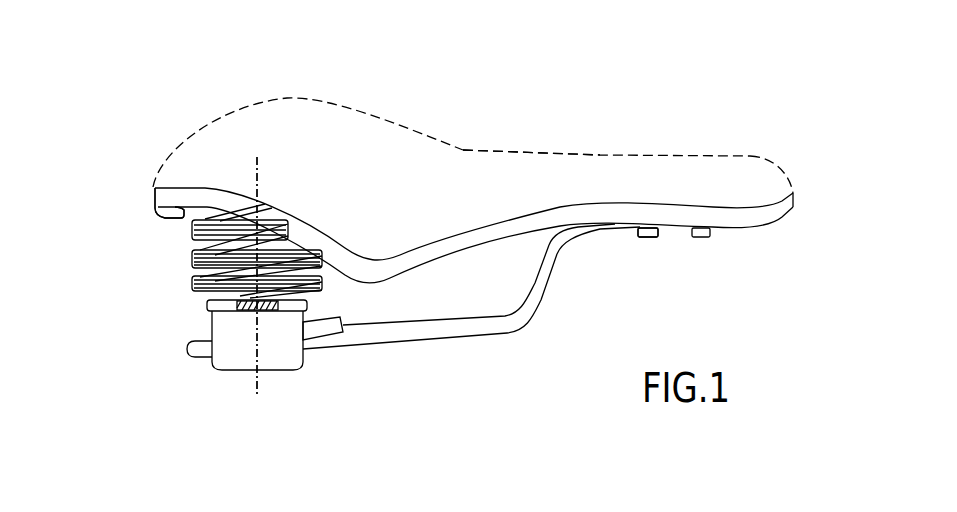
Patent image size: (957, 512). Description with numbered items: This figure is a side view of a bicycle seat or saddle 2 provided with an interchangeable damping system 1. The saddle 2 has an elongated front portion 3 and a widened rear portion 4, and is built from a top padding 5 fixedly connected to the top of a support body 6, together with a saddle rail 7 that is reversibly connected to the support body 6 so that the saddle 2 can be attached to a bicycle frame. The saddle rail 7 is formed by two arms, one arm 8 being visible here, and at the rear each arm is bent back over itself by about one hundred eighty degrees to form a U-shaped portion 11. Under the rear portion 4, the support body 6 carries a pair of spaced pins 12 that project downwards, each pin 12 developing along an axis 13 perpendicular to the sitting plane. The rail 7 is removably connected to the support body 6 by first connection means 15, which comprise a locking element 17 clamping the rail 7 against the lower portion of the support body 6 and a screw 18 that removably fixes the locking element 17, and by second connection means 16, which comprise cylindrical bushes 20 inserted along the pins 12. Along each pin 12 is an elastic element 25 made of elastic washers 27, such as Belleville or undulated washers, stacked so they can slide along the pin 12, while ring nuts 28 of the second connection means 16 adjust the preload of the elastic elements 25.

The interchangeable damping system 1 is at (130, 278).
The seat or saddle 2 is at (805, 168).
The front portion 3 is at (603, 128).
The rear portion 4 is at (248, 80).
The top padding 5 is at (474, 147).
The support body 6 is at (797, 203).
The saddle rail 7 is at (485, 346).
The arm 8 is at (537, 288).
The U-shaped portion 11 is at (192, 357).
The pin 12 is at (210, 298).
The axis 13 is at (253, 170).
The first connection means 15 is at (652, 262).
The second connection means 16 is at (234, 378).
The locking element 17 is at (660, 237).
The screw 18 is at (703, 237).
The bush 20 is at (303, 362).
The elastic element 25 is at (136, 223).
The elastic washer 27 is at (193, 260).
The ring nut 28 is at (307, 301).